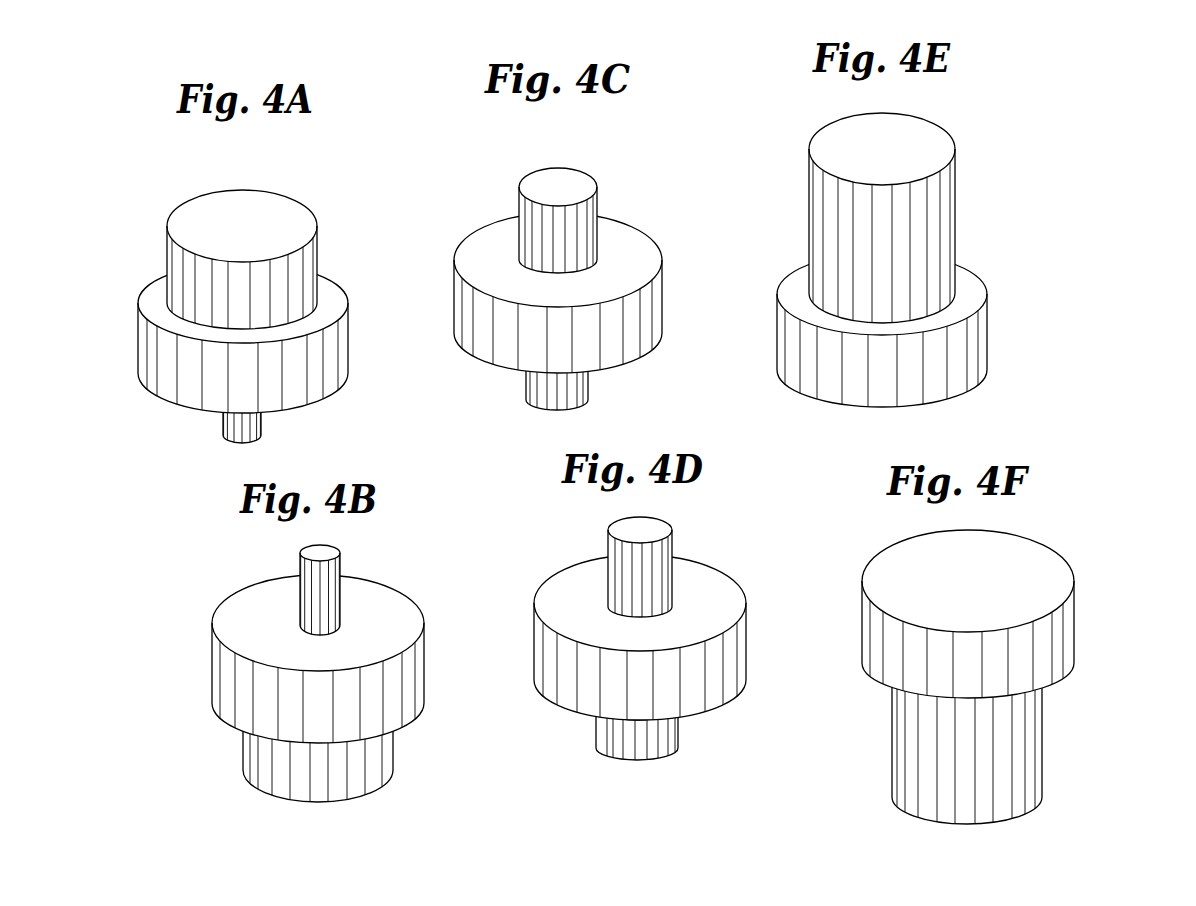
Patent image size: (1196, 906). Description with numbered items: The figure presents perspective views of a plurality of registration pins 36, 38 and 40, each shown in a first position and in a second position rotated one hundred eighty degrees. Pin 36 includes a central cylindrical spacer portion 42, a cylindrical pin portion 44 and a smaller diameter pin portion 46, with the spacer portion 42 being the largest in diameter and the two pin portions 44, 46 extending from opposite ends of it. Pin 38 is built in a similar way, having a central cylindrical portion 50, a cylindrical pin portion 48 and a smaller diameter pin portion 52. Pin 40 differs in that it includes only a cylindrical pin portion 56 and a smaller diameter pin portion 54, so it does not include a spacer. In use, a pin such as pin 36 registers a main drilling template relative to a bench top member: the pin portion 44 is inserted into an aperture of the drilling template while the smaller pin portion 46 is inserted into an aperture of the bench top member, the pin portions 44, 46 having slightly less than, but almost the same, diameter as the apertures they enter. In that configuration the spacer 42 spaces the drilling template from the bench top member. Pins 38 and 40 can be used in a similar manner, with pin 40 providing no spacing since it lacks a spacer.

In FIG. 4A, the registration pin 36 is at (218, 294).
In FIG. 4B, the registration pin 36 is at (308, 684).
In FIG. 4C, the registration pin 38 is at (591, 264).
In FIG. 4D, the registration pin 38 is at (675, 657).
In FIG. 4E, the registration pin 40 is at (933, 242).
In FIG. 4F, the registration pin 40 is at (1011, 683).
In FIG. 4A, the central cylindrical spacer portion 42 is at (137, 333).
In FIG. 4B, the central cylindrical spacer portion 42 is at (215, 663).
In FIG. 4A, the cylindrical pin portion 44 is at (166, 245).
In FIG. 4B, the cylindrical pin portion 44 is at (392, 753).
In FIG. 4A, the smaller diameter pin portion 46 is at (222, 425).
In FIG. 4B, the smaller diameter pin portion 46 is at (335, 567).
In FIG. 4C, the cylindrical pin portion 48 is at (595, 223).
In FIG. 4D, the cylindrical pin portion 48 is at (680, 732).
In FIG. 4C, the central cylindrical portion 50 is at (660, 285).
In FIG. 4D, the central cylindrical portion 50 is at (745, 640).
In FIG. 4C, the smaller diameter pin portion 52 is at (587, 385).
In FIG. 4D, the smaller diameter pin portion 52 is at (672, 547).
In FIG. 4E, the smaller diameter pin portion 54 is at (955, 227).
In FIG. 4F, the smaller diameter pin portion 54 is at (1042, 717).
In FIG. 4E, the cylindrical pin portion 56 is at (983, 333).
In FIG. 4F, the cylindrical pin portion 56 is at (1070, 625).